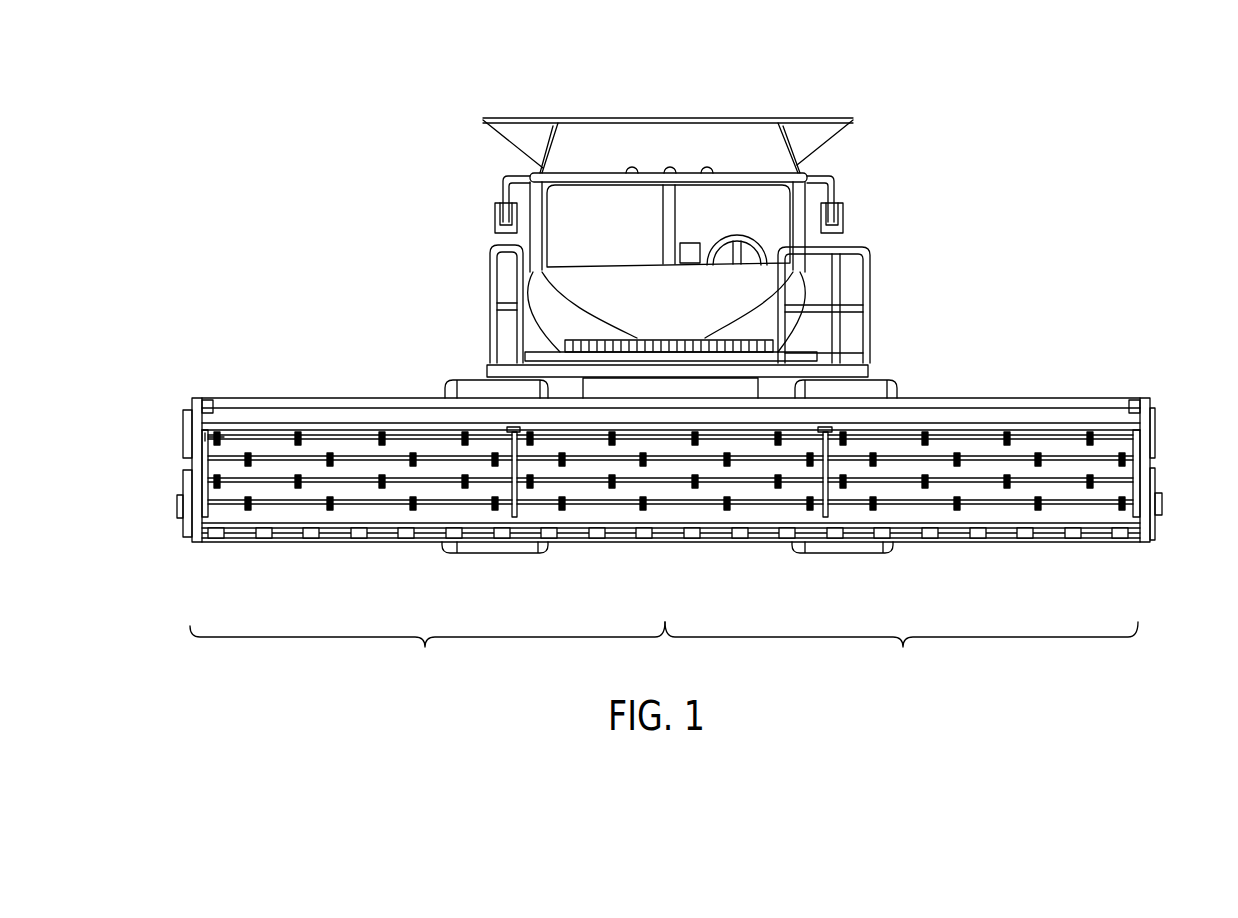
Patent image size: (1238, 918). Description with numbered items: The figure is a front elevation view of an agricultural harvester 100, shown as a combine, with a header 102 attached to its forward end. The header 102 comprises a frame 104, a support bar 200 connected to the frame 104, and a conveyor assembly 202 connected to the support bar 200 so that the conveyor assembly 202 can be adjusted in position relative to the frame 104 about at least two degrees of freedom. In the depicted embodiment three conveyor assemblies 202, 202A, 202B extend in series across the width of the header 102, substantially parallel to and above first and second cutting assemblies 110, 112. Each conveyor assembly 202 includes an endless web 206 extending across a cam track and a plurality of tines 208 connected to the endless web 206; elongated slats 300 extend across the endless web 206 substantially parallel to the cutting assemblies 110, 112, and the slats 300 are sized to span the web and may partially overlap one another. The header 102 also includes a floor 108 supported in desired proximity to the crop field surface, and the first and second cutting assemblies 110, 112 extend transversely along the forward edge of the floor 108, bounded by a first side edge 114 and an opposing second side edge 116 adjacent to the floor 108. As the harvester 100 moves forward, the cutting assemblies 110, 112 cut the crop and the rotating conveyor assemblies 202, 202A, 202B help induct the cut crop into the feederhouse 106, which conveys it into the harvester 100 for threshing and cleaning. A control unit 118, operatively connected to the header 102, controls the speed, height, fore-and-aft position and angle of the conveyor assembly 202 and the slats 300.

The agricultural harvester 100 is at (323, 138).
The header 102 is at (172, 416).
The frame 104 is at (498, 372).
The feederhouse 106 is at (725, 387).
The floor 108 is at (448, 525).
The first cutting assembly 110 is at (427, 650).
The second cutting assembly 112 is at (901, 650).
The first side edge 114 is at (183, 522).
The second side edge 116 is at (1157, 524).
The control unit 118 is at (690, 242).
The support bar 200 is at (512, 427).
The conveyor assembly 202 is at (343, 522).
The conveyor assembly 202A is at (688, 527).
The conveyor assembly 202B is at (993, 526).
The endless web 206 is at (222, 447).
The tines 208 is at (218, 482).
The slats 300 is at (237, 435).